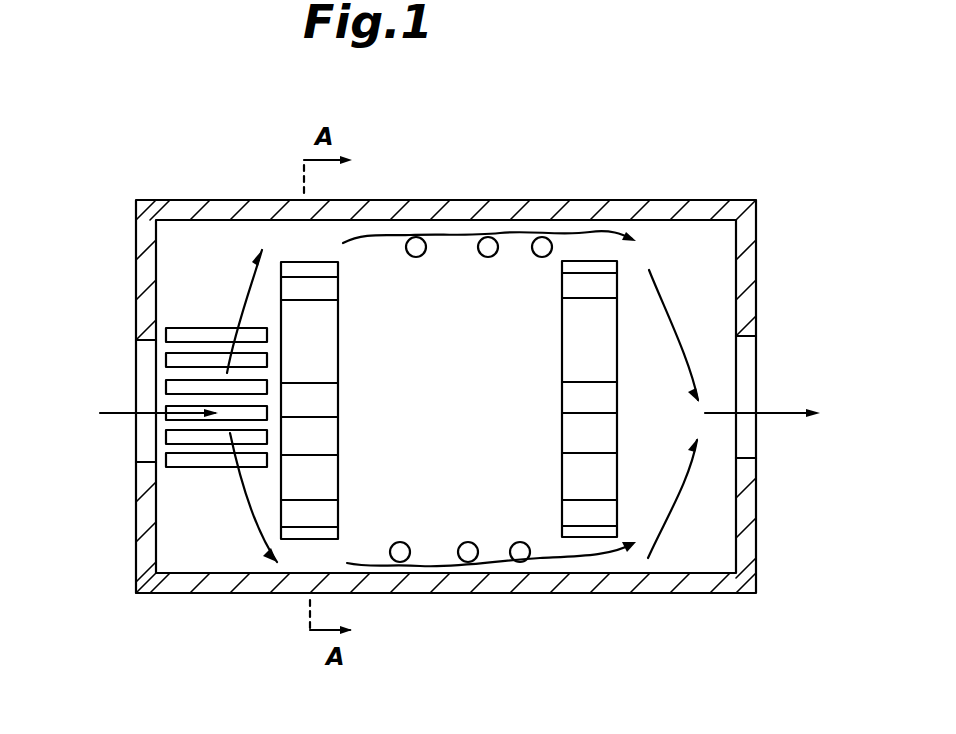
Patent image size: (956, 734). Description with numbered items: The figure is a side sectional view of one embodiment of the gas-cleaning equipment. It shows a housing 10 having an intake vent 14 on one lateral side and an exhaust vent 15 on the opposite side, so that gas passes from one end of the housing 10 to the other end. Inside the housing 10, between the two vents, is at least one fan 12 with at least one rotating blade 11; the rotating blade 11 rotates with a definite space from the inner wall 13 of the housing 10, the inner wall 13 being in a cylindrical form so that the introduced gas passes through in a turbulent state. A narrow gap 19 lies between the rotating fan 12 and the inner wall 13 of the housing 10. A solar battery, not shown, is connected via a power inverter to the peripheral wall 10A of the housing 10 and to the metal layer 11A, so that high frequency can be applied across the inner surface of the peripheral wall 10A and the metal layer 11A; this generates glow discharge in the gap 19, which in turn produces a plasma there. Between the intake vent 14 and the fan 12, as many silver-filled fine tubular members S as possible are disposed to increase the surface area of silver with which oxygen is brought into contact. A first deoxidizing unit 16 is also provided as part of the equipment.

The housing 10 is at (688, 184).
The peripheral wall 10A is at (497, 202).
The rotating blade 11 is at (312, 400).
The metal layer 11A is at (295, 395).
The fan 12 is at (315, 333).
The inner wall 13 is at (240, 236).
The intake vent 14 is at (153, 443).
The exhaust vent 15 is at (740, 430).
The first deoxidizing unit 16 is at (423, 202).
The narrow gap 19 is at (292, 237).
The silver-filled fine tubular members S is at (185, 325).